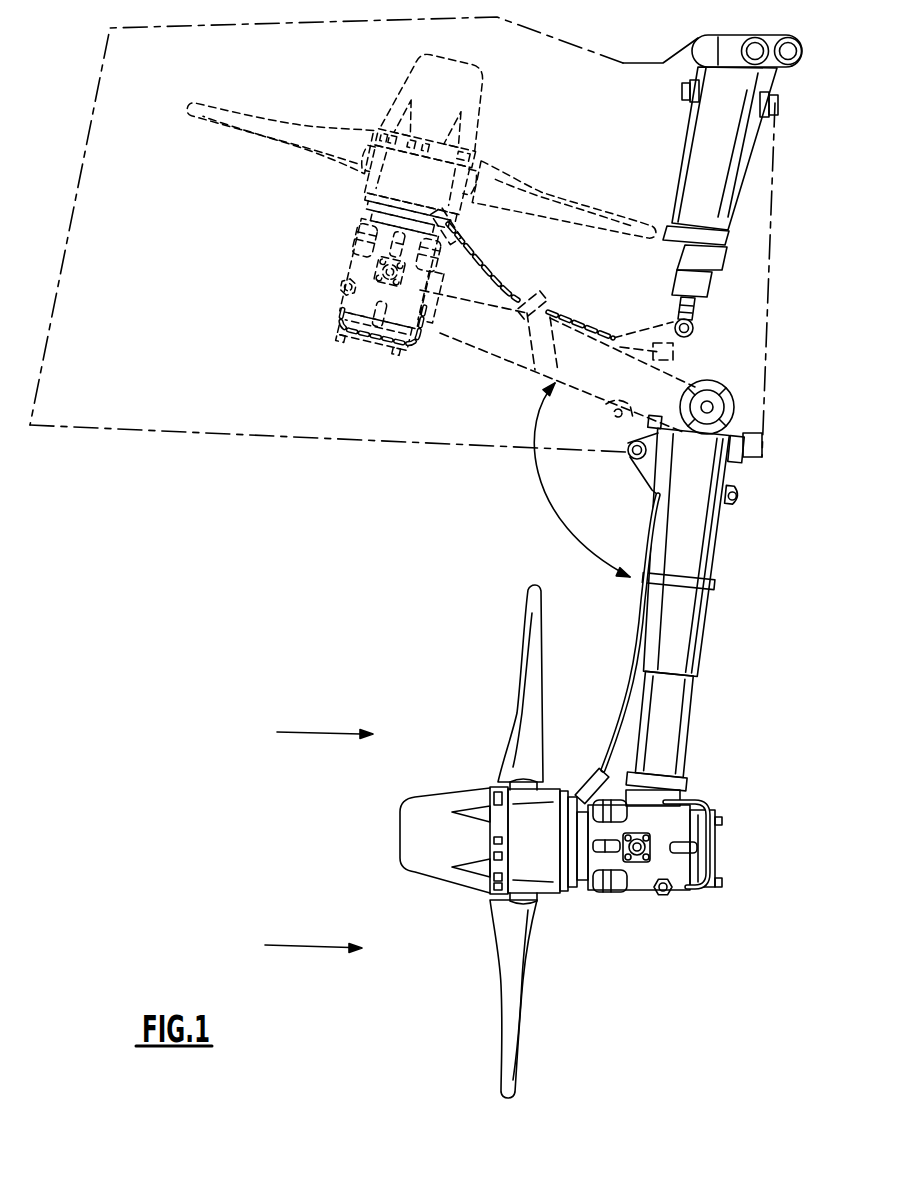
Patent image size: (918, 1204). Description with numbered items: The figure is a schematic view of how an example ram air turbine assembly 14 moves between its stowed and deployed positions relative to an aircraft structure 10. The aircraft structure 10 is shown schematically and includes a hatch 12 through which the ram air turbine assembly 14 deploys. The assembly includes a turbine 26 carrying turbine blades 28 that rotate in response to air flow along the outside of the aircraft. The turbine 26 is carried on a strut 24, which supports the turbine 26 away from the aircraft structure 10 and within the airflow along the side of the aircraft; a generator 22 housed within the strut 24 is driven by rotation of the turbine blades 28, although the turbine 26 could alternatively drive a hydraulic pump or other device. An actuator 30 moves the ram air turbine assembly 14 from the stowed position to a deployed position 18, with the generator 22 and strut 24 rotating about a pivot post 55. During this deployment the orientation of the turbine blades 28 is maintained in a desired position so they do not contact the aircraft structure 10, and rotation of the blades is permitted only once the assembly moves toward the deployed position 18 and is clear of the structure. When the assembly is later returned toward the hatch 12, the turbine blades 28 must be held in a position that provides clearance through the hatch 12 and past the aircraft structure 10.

The aircraft structure 10 is at (402, 262).
The hatch 12 is at (222, 448).
The ram air turbine assembly 14 is at (587, 739).
The deployed position 18 is at (378, 633).
The generator 22 is at (700, 573).
The strut 24 is at (780, 688).
The turbine 26 is at (383, 865).
The turbine blades 28 is at (513, 1025).
The actuator 30 is at (720, 176).
The pivot post 55 is at (716, 408).